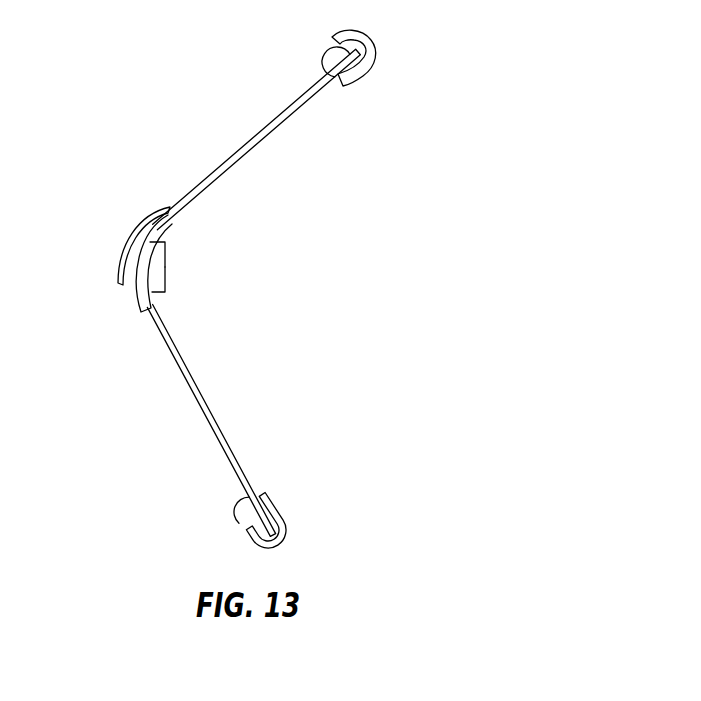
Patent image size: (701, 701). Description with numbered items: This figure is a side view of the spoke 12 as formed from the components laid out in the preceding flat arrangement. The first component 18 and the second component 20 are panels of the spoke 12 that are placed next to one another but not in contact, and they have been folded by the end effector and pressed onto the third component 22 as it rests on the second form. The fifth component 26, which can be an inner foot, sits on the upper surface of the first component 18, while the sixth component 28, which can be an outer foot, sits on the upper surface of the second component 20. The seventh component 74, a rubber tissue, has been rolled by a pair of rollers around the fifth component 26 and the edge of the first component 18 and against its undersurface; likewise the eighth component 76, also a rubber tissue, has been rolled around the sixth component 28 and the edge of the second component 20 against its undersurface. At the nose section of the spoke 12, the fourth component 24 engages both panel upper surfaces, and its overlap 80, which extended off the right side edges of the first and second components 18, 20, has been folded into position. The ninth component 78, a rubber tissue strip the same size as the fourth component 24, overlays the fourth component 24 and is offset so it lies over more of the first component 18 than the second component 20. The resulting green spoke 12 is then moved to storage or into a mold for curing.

The spoke 12 is at (490, 186).
The first component 18 is at (273, 128).
The second component 20 is at (215, 422).
The third component 22 is at (155, 283).
The fourth component 24 is at (136, 298).
The fifth component 26 is at (322, 63).
The sixth component 28 is at (246, 515).
The seventh component 74 is at (372, 44).
The eighth component 76 is at (286, 531).
The ninth component 78 is at (115, 262).
The overlap 80 is at (158, 238).